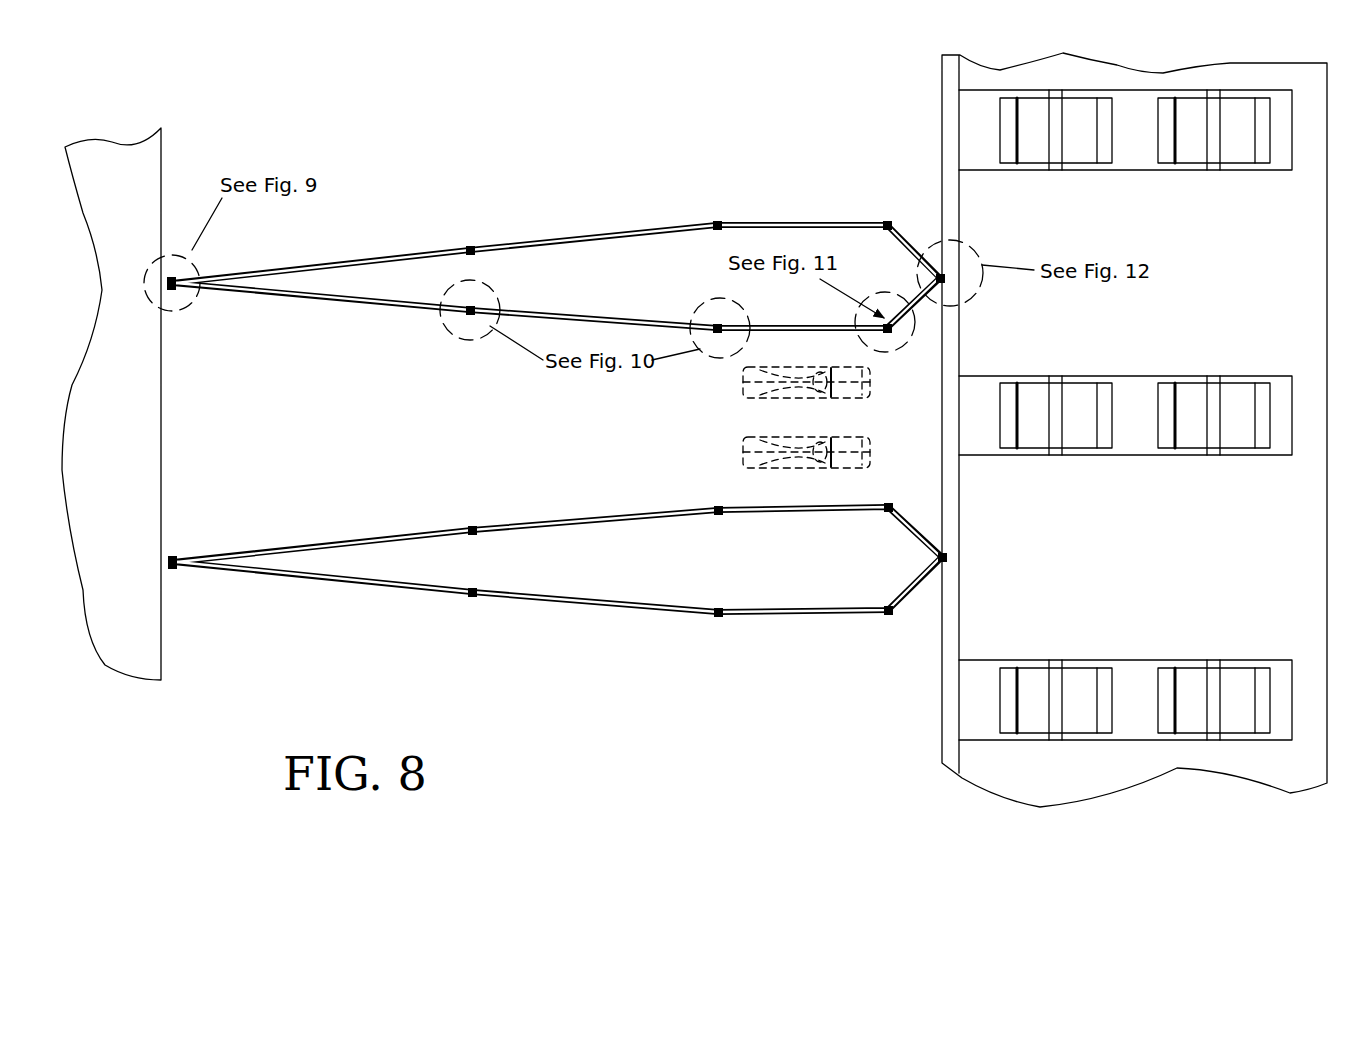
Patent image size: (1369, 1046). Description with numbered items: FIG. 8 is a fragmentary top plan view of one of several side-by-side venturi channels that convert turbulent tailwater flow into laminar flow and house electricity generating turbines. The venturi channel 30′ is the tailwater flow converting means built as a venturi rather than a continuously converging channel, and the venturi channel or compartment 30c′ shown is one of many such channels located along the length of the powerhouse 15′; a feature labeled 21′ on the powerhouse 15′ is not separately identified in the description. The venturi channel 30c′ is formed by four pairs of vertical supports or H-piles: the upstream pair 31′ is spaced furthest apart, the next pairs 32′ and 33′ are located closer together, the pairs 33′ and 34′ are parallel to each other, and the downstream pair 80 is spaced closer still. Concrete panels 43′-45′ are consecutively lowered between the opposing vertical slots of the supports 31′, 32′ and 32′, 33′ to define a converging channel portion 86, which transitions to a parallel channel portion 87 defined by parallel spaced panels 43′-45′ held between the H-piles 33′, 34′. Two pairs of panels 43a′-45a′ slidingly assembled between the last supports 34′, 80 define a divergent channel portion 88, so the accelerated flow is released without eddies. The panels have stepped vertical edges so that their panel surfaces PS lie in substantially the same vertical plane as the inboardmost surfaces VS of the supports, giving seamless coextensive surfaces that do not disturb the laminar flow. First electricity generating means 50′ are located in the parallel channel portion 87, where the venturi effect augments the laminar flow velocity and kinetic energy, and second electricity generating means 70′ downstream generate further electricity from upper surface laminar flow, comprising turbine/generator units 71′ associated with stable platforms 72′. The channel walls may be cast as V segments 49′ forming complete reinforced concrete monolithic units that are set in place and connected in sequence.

The powerhouse 15′ is at (148, 153).
The mounting surface 21′ is at (158, 416).
The venturi channel 30′ is at (118, 610).
The venturi channel or compartment 30c′ is at (197, 437).
The vertical supports 31′ is at (173, 292).
The vertical supports 32′ is at (463, 302).
The vertical supports 33′ is at (708, 317).
The vertical supports 34′ is at (878, 300).
The concrete panels 43′-45′ is at (356, 306).
The panels 43a′-45a′ is at (970, 300).
The V segments 49′ is at (601, 243).
The first electricity generating means 50′ is at (768, 395).
The second electricity generating means 70′ is at (1162, 188).
The turbine/generator units 71′ is at (1103, 103).
The stable platforms 72′ is at (1303, 207).
The vertical supports 80 is at (949, 272).
The converging channel portion 86 is at (313, 511).
The parallel channel portion 87 is at (814, 366).
The divergent channel portion 88 is at (938, 357).
The panel surfaces PS is at (250, 300).
The inboardmost surfaces VS is at (190, 295).